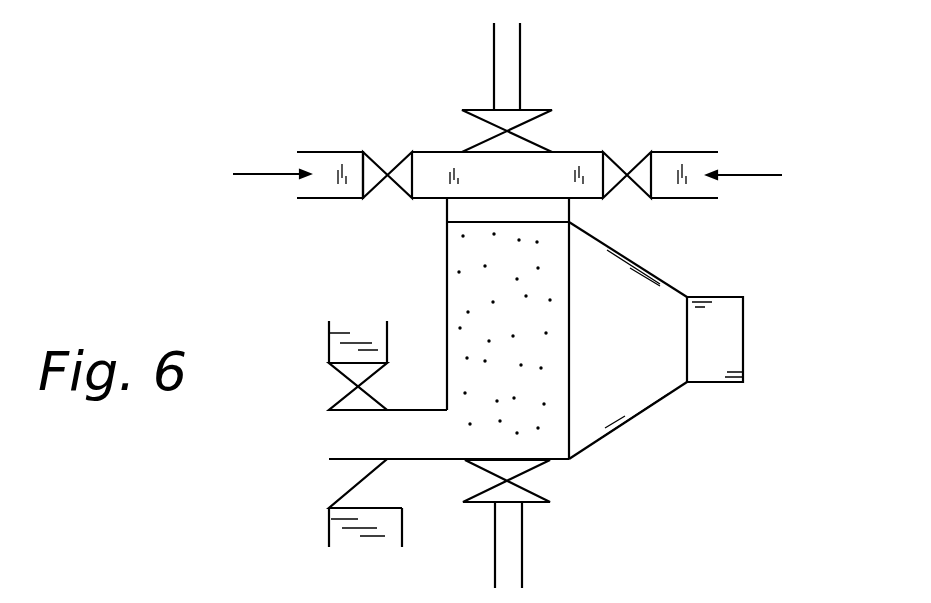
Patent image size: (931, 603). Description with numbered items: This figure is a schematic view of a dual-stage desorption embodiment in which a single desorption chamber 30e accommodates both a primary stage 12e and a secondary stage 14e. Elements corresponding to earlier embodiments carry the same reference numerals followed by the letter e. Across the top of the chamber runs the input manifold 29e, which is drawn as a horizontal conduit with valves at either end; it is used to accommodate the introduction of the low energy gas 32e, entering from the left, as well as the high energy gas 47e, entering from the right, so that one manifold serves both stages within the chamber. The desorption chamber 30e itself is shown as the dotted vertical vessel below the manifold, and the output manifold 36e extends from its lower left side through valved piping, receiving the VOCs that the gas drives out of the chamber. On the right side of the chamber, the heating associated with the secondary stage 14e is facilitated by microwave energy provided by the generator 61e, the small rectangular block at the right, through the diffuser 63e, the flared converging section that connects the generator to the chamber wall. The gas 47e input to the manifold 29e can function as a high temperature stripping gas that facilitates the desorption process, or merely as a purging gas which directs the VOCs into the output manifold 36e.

The low energy gas 32e is at (257, 172).
The input manifold 29e is at (588, 160).
The high energy gas 47e is at (782, 175).
The desorption chamber 30e is at (472, 265).
The output manifold 36e is at (343, 432).
The primary stage 12e is at (700, 226).
The secondary stage 14e is at (713, 262).
The generator 61e is at (718, 353).
The diffuser 63e is at (630, 398).